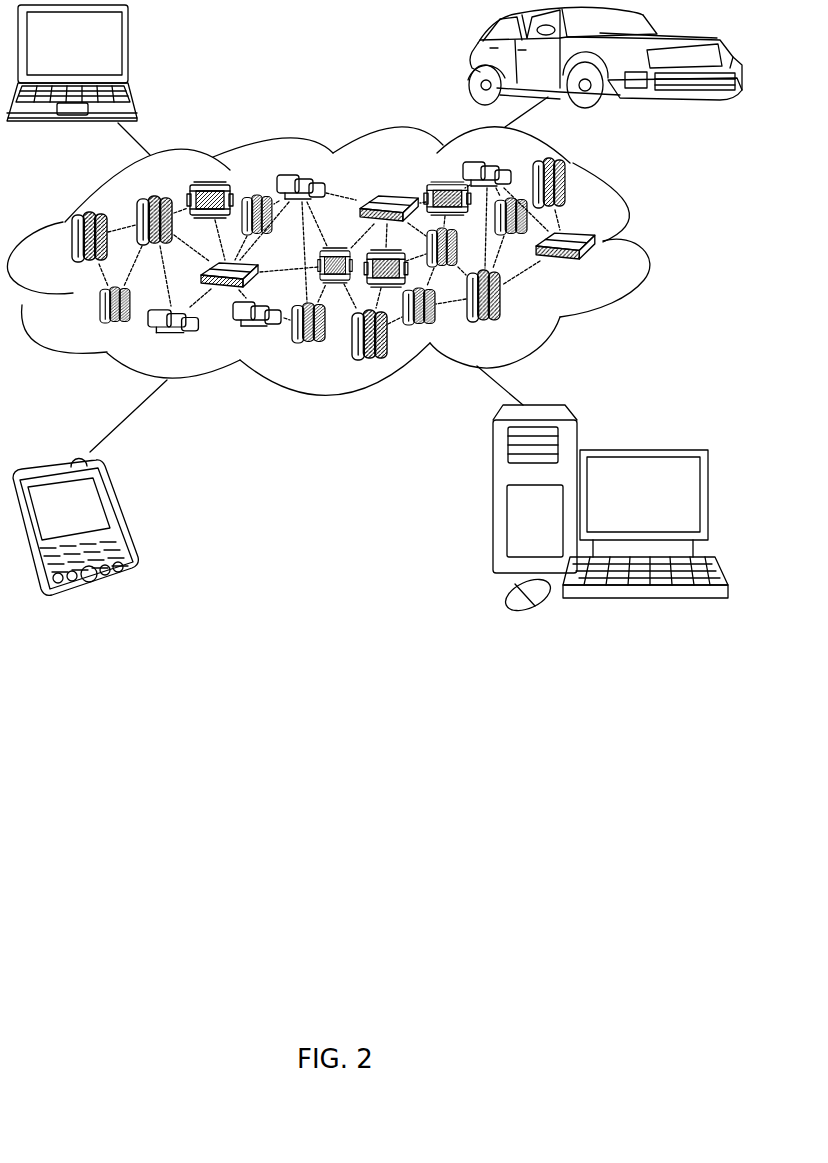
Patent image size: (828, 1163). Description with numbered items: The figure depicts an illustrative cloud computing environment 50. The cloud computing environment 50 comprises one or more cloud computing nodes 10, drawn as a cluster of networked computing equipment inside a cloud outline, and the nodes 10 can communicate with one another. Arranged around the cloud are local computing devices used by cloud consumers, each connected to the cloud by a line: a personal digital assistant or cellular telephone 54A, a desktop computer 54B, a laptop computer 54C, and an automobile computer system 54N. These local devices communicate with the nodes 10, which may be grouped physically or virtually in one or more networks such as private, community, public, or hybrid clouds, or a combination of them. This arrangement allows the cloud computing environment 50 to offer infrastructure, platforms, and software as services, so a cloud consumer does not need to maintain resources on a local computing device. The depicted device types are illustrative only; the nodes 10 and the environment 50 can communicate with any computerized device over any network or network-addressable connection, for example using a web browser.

The cloud computing nodes 10 is at (597, 266).
The cloud computing environment 50 is at (642, 245).
The personal digital assistant or cellular telephone 54A is at (120, 518).
The desktop computer 54B is at (652, 433).
The laptop computer 54C is at (128, 48).
The automobile computer system 54N is at (472, 60).